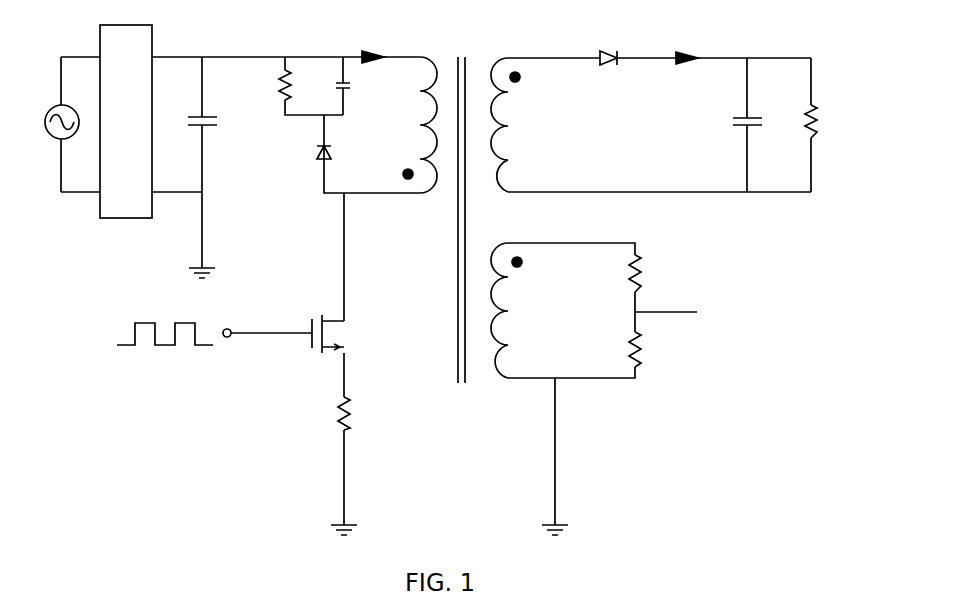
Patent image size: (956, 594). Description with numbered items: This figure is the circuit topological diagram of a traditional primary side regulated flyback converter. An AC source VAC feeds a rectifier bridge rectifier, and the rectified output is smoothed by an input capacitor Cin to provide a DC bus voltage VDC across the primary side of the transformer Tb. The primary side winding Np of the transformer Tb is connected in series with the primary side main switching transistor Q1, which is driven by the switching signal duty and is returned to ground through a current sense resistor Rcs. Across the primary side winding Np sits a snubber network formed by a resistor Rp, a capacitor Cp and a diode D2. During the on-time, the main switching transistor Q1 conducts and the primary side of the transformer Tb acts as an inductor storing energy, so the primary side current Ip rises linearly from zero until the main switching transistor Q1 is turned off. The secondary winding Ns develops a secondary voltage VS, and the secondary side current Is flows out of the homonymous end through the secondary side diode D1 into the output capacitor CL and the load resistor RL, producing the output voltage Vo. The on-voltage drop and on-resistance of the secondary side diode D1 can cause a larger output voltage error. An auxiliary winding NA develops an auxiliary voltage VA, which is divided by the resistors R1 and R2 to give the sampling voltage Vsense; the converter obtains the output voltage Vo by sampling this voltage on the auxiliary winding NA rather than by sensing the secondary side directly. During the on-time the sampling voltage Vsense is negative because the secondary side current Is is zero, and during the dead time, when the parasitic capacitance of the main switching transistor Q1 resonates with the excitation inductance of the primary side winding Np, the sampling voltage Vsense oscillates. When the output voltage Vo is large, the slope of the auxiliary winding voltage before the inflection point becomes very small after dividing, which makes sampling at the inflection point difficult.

The AC input voltage source VAC is at (46, 122).
The rectifier bridge rectifier is at (126, 121).
The input capacitor Cin is at (188, 127).
The DC bus voltage VDC is at (237, 125).
The snubber resistor Rp is at (273, 88).
The snubber capacitor Cp is at (356, 85).
The snubber diode D2 is at (341, 159).
The primary side current Ip is at (373, 43).
The primary side winding Np is at (420, 108).
The transformer Tb is at (467, 203).
The secondary winding Ns is at (506, 107).
The secondary voltage VS is at (551, 127).
The secondary side diode D1 is at (608, 44).
The secondary side current Is is at (687, 43).
The output capacitor CL is at (730, 127).
The load resistor RL is at (795, 122).
The output voltage Vo is at (831, 124).
The auxiliary winding NA is at (506, 296).
The auxiliary winding voltage VA is at (556, 312).
The voltage divider resistor R1 is at (621, 273).
The voltage divider resistor R2 is at (621, 349).
The sampling voltage Vsense is at (690, 297).
The primary side main switching transistor Q1 is at (346, 334).
The switching signal duty is at (186, 351).
The current sense resistor Rcs is at (364, 414).